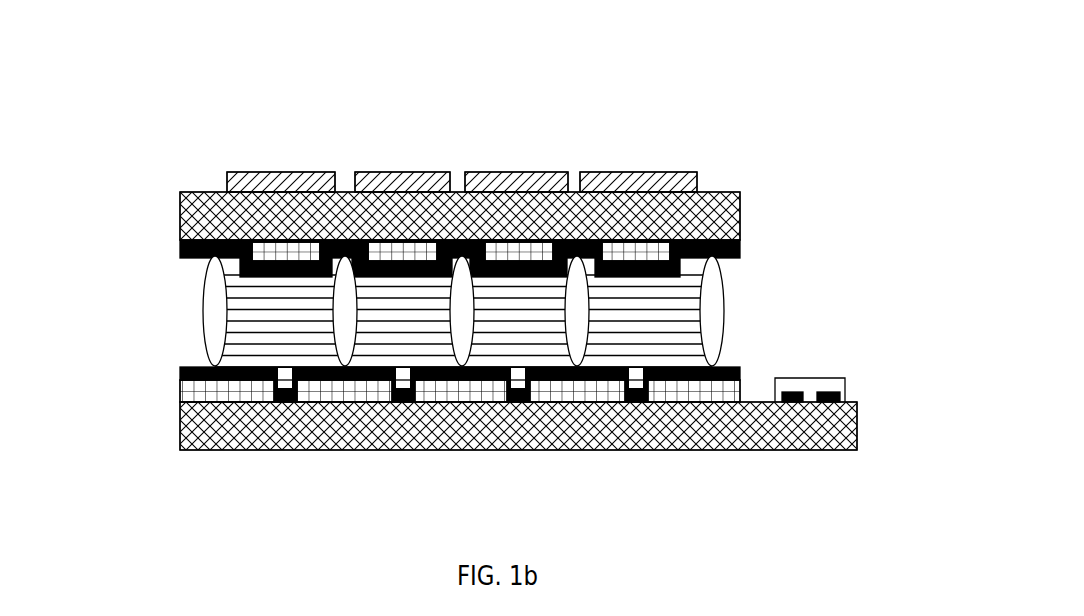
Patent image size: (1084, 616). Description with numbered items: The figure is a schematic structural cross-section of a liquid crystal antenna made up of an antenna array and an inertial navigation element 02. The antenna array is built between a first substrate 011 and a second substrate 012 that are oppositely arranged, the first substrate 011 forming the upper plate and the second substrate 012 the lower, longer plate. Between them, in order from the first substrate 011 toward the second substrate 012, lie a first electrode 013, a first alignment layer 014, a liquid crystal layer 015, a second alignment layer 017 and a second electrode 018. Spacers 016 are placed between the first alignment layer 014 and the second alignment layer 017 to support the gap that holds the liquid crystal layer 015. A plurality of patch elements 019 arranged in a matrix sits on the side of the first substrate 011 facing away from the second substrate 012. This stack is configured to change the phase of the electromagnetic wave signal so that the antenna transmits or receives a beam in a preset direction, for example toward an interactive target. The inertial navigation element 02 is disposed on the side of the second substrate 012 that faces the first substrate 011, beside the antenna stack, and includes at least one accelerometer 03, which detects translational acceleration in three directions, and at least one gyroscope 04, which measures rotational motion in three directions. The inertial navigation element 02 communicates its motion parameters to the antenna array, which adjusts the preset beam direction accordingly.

The first substrate 011 is at (742, 217).
The second substrate 012 is at (858, 422).
The first electrode 013 is at (258, 258).
The first alignment layer 014 is at (180, 248).
The liquid crystal layer 015 is at (623, 333).
The spacers 016 is at (723, 297).
The second alignment layer 017 is at (180, 372).
The second electrode 018 is at (180, 394).
The patch elements 019 is at (635, 170).
The inertial navigation element 02 is at (832, 378).
The accelerometer 03 is at (800, 402).
The gyroscope 04 is at (836, 402).